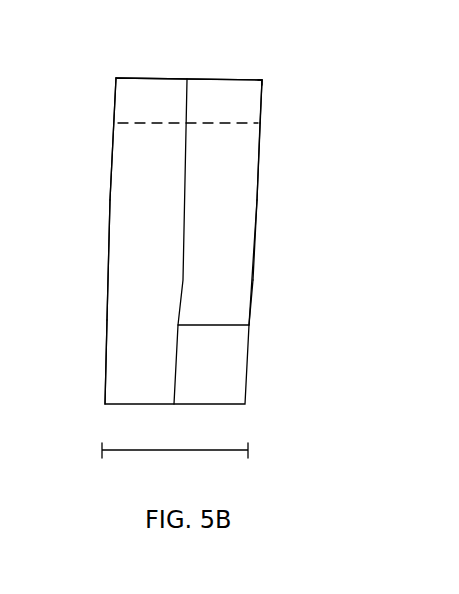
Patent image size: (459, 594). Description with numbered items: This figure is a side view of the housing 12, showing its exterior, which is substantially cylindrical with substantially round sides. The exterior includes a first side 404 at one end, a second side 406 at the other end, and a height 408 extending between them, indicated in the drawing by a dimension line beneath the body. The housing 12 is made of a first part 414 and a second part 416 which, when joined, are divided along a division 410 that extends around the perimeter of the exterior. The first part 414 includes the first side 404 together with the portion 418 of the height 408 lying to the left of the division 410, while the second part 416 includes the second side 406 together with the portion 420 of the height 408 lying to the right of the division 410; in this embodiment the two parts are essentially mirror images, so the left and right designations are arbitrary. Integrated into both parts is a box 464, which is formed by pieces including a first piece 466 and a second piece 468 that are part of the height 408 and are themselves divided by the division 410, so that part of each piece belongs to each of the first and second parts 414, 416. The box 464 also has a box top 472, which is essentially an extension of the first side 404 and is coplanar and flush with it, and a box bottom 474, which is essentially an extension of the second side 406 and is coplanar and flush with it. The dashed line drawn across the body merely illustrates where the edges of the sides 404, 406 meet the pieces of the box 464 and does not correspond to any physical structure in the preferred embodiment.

The housing 12 is at (91, 95).
The first side 404 is at (113, 250).
The second side 406 is at (257, 246).
The height 408 is at (175, 465).
The division 410 is at (249, 325).
The first part 414 is at (130, 203).
The second part 416 is at (242, 183).
The portion of height 418 is at (128, 315).
The portion of height 420 is at (236, 283).
The box 464 is at (247, 100).
The first piece 466 is at (221, 95).
The second piece 468 is at (153, 78).
The box top 472 is at (116, 107).
The box bottom 474 is at (262, 88).